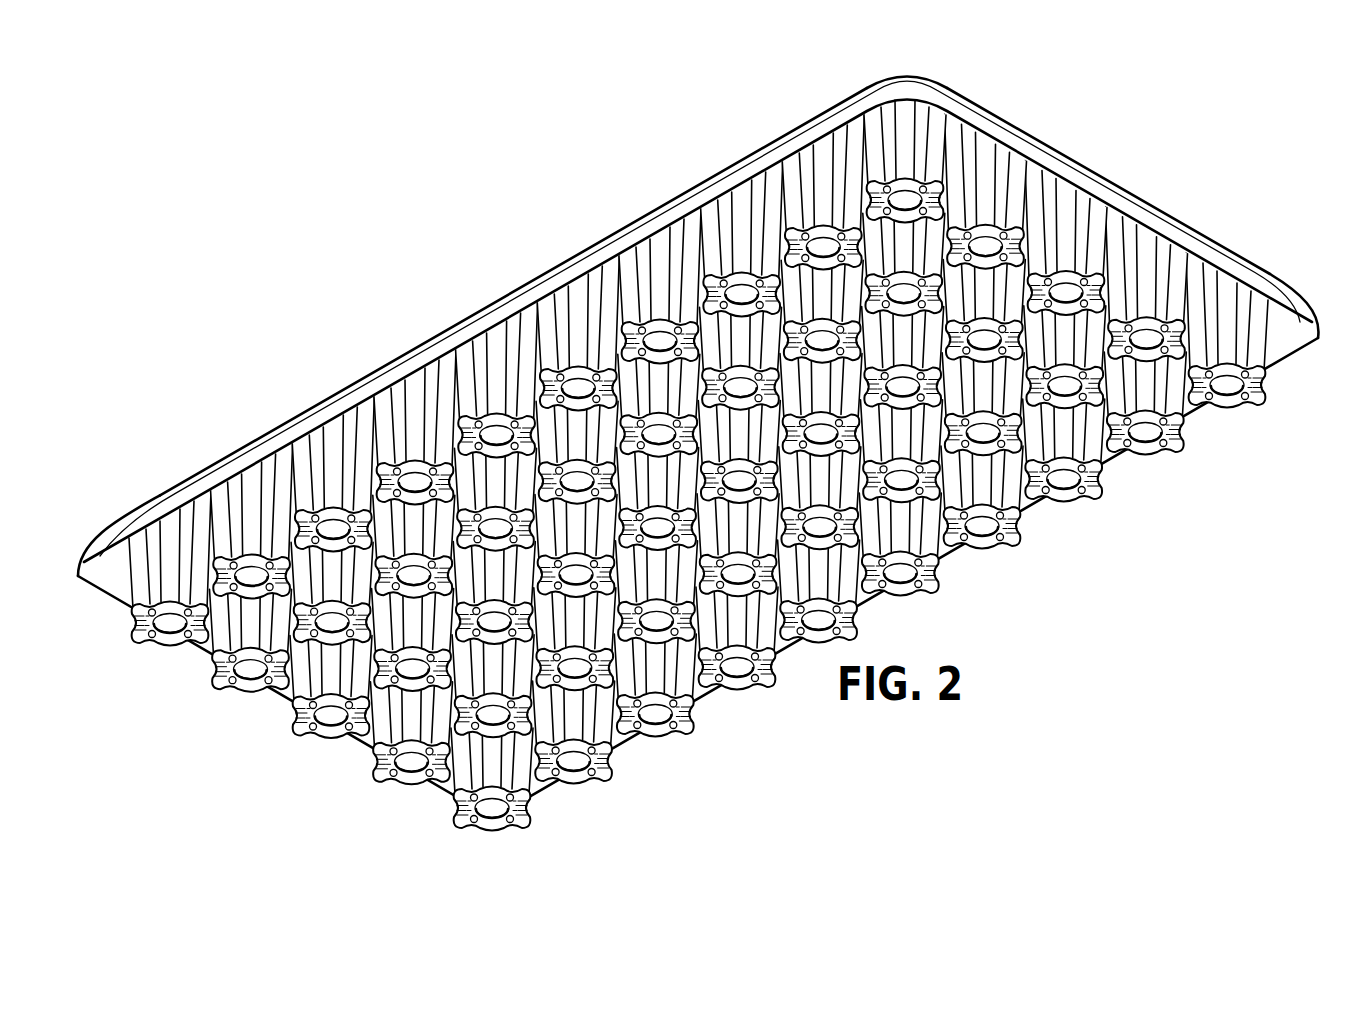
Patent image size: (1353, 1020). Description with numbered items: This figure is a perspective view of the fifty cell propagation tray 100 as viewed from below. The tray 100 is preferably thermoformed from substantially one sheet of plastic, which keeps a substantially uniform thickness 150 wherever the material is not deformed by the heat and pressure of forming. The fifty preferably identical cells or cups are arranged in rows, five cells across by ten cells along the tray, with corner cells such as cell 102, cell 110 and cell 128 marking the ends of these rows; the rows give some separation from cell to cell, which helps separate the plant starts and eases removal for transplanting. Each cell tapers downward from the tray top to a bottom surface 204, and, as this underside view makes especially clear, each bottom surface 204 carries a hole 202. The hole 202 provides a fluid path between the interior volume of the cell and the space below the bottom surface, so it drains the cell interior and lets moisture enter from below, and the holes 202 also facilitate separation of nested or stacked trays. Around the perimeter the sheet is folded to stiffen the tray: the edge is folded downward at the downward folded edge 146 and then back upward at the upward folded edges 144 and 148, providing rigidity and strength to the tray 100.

The propagation tray 100 is at (458, 245).
The cell 102 is at (1235, 342).
The cell 110 is at (921, 116).
The cell 128 is at (153, 543).
The upward folded edge 144 is at (1085, 190).
The downward folded edge 146 is at (832, 127).
The upward folded edge 148 is at (720, 194).
The thickness 150 is at (1318, 333).
The hole 202 is at (1225, 408).
The bottom surface 204 is at (1150, 455).